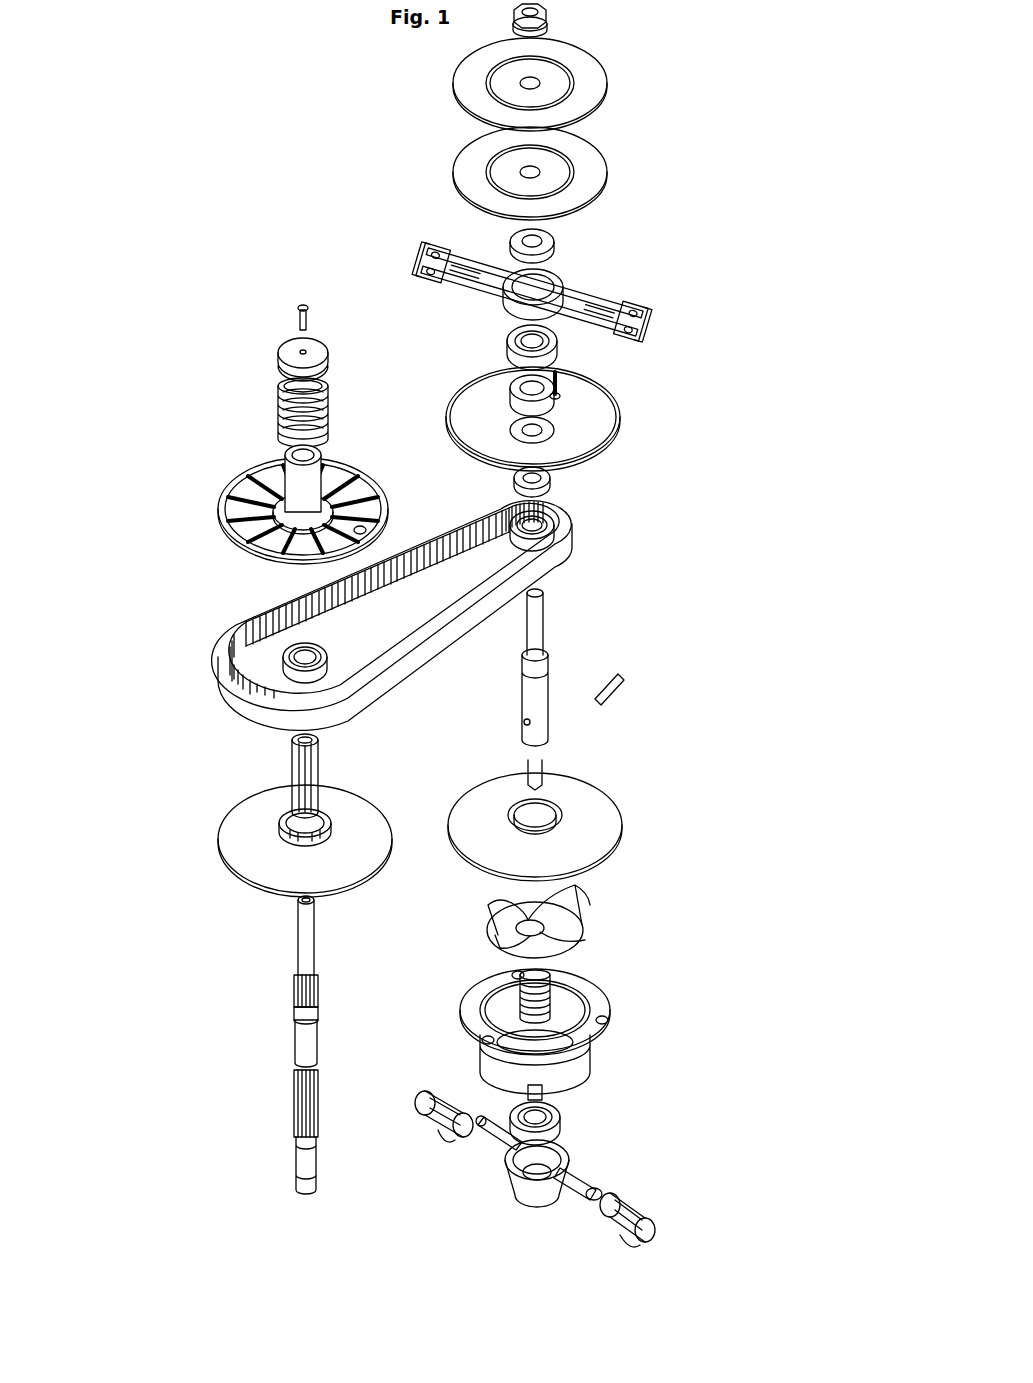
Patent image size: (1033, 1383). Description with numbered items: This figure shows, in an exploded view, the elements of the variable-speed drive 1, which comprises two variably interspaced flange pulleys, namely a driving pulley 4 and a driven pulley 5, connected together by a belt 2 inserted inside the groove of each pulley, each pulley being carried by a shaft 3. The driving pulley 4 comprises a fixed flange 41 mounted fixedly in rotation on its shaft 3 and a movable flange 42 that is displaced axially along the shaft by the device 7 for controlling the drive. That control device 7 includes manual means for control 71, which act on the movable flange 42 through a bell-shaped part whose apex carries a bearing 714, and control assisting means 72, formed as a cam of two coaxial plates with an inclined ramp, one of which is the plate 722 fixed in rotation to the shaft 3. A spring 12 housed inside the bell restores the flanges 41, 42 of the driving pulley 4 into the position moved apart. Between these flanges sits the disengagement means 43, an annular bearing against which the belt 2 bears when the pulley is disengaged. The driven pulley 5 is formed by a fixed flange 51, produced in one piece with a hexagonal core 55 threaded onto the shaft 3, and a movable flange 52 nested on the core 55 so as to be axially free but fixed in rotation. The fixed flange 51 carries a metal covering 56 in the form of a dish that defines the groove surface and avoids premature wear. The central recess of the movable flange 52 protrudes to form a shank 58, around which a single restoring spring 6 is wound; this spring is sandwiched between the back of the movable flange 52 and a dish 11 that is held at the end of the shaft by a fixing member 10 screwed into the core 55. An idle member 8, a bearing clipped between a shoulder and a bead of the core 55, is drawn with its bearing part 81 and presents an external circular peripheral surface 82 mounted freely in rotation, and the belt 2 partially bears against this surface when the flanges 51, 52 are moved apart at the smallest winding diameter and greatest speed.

The variable-speed drive 1 is at (652, 541).
The belt 2 is at (555, 567).
The shaft 3 is at (553, 758).
The driving pulley 4 is at (608, 373).
The driven pulley 5 is at (232, 563).
The restoring spring 6 is at (280, 407).
The device for controlling the variable-speed drive 7 is at (613, 1077).
The idle member 8 is at (122, 645).
The fixing member 10 is at (314, 318).
The dish 11 is at (335, 352).
The spring 12 is at (554, 1000).
The fixed flange 41 is at (625, 415).
The movable flange 42 is at (628, 823).
The disengagement means 43 is at (565, 522).
The fixed flange 51 is at (254, 882).
The movable flange 52 is at (216, 510).
The core 55 is at (290, 773).
The metal covering 56 is at (224, 827).
The shank 58 is at (282, 483).
The means for control 71 is at (642, 1204).
The control assisting means 72 is at (472, 883).
The bearing 81 is at (284, 657).
The external circular peripheral surface 82 is at (294, 676).
The bearing 714 is at (569, 1124).
The plate 722 is at (592, 908).